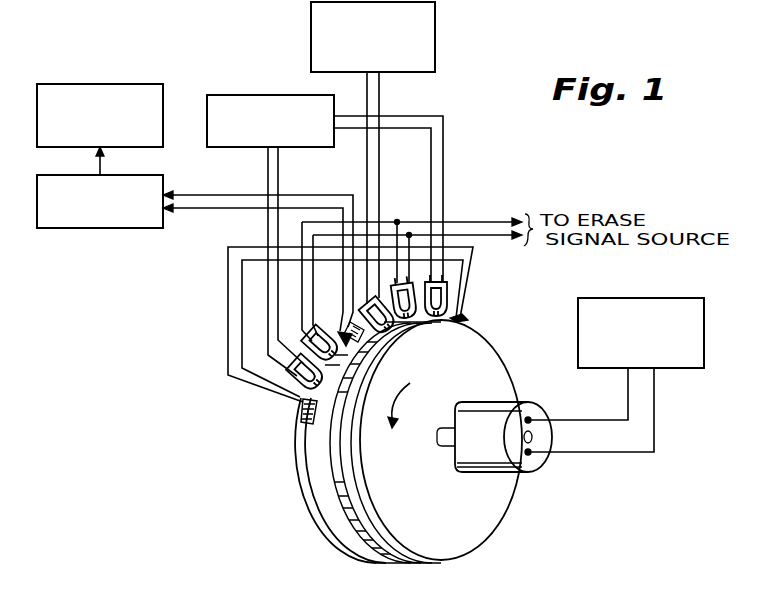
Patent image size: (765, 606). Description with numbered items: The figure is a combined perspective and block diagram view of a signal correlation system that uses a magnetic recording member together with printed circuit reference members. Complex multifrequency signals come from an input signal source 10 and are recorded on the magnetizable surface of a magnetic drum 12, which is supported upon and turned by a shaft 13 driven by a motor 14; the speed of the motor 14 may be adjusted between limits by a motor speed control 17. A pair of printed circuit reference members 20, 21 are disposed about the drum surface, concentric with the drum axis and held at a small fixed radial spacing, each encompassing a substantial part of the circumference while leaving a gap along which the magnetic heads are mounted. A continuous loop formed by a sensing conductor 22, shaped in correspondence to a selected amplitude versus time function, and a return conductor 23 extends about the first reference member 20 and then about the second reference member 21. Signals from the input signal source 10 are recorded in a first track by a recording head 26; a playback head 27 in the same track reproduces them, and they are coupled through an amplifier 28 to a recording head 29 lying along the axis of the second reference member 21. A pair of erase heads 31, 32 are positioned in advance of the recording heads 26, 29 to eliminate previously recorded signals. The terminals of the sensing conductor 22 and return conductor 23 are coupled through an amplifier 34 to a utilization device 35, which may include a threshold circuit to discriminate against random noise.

The input signal source 10 is at (436, 30).
The magnetic drum 12 is at (489, 357).
The shaft 13 is at (446, 448).
The motor 14 is at (524, 401).
The motor speed control 17 is at (665, 299).
The printed circuit reference member 20 is at (413, 562).
The printed circuit reference member 21 is at (351, 548).
The sensing conductor 22 is at (207, 196).
The return conductor 23 is at (236, 209).
The recording head 26 is at (395, 333).
The playback head 27 is at (450, 297).
The amplifier 28 is at (229, 95).
The recording head 29 is at (304, 360).
The erase head 31 is at (421, 320).
The erase head 32 is at (321, 327).
The amplifier 34 is at (165, 182).
The utilization device 35 is at (120, 84).